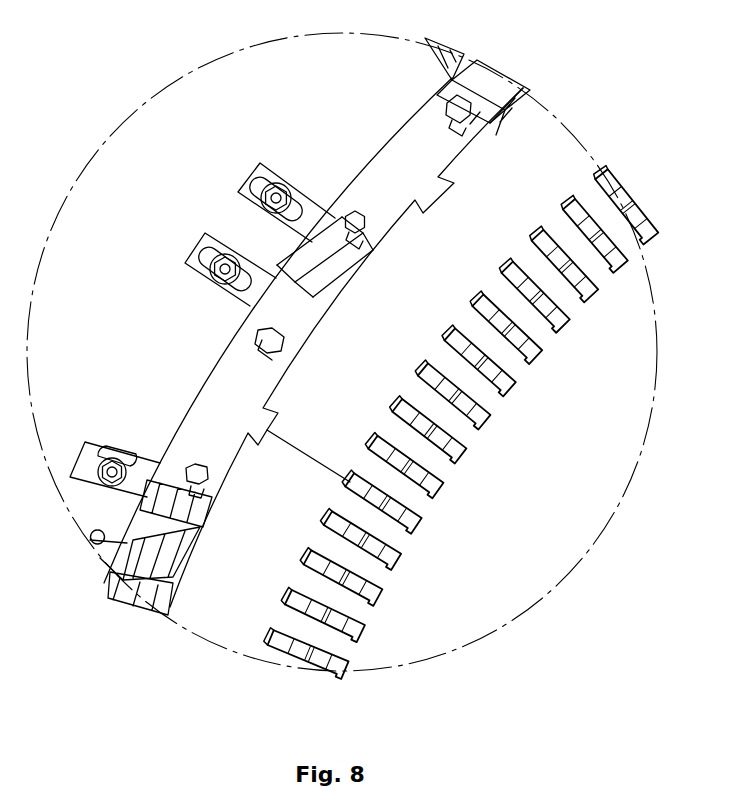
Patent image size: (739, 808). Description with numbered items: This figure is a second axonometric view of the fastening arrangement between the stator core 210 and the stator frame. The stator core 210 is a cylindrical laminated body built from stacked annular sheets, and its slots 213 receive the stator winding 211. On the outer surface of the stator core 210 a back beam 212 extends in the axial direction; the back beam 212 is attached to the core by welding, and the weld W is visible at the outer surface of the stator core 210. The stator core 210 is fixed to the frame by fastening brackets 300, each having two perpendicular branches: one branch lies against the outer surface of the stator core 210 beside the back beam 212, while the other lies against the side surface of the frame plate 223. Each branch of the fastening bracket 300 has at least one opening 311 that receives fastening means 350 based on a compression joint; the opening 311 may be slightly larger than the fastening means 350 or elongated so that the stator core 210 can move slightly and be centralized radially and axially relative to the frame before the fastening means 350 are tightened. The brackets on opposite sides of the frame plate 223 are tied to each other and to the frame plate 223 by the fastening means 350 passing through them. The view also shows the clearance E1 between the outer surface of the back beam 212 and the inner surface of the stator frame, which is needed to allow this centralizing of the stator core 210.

The fastening bracket 300 is at (169, 224).
The fastening means 350 is at (278, 186).
The opening 311 is at (256, 280).
The back beam 212 is at (313, 297).
The stator core 210 is at (543, 203).
The stator winding 211 is at (350, 530).
The slots 213 is at (453, 422).
The frame plate 223 is at (137, 391).
The clearance E1 is at (288, 263).
The weld W is at (366, 270).